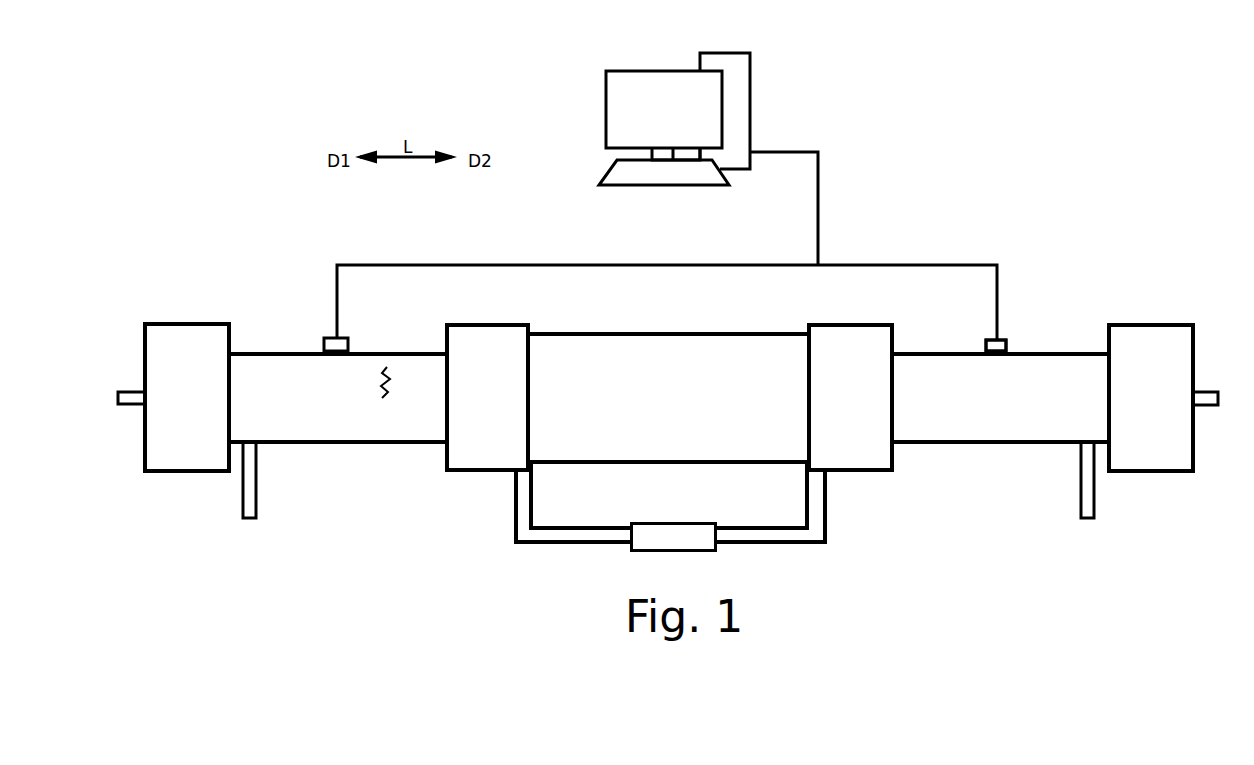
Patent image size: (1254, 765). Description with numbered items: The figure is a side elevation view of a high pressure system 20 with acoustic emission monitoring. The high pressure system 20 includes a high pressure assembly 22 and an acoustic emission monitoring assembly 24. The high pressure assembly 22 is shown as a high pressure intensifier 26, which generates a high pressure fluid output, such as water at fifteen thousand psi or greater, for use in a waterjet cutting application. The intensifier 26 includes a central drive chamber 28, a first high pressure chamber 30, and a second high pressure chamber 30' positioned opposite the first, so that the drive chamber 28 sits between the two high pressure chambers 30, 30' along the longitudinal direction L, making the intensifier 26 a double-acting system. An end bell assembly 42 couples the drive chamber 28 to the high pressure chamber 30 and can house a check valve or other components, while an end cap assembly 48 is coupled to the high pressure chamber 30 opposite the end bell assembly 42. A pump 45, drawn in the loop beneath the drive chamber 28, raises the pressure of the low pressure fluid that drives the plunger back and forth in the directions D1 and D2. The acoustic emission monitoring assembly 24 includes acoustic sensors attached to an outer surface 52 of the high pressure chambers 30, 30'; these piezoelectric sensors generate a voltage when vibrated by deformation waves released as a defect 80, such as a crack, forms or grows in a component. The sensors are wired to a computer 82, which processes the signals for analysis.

The high pressure system 20 is at (246, 252).
The high pressure assembly 22 is at (335, 452).
The acoustic emission monitoring assembly 24 is at (976, 326).
The high pressure intensifier 26 is at (673, 473).
The drive chamber 28 is at (677, 333).
The high pressure chamber 30 is at (338, 379).
The second high pressure chamber 30' is at (1000, 419).
The end bell assembly 42 is at (490, 321).
The pump 45 is at (698, 521).
The end cap assembly 48 is at (188, 321).
The outer surface 52 is at (375, 444).
The defect 80 is at (387, 367).
The computer 82 is at (606, 90).